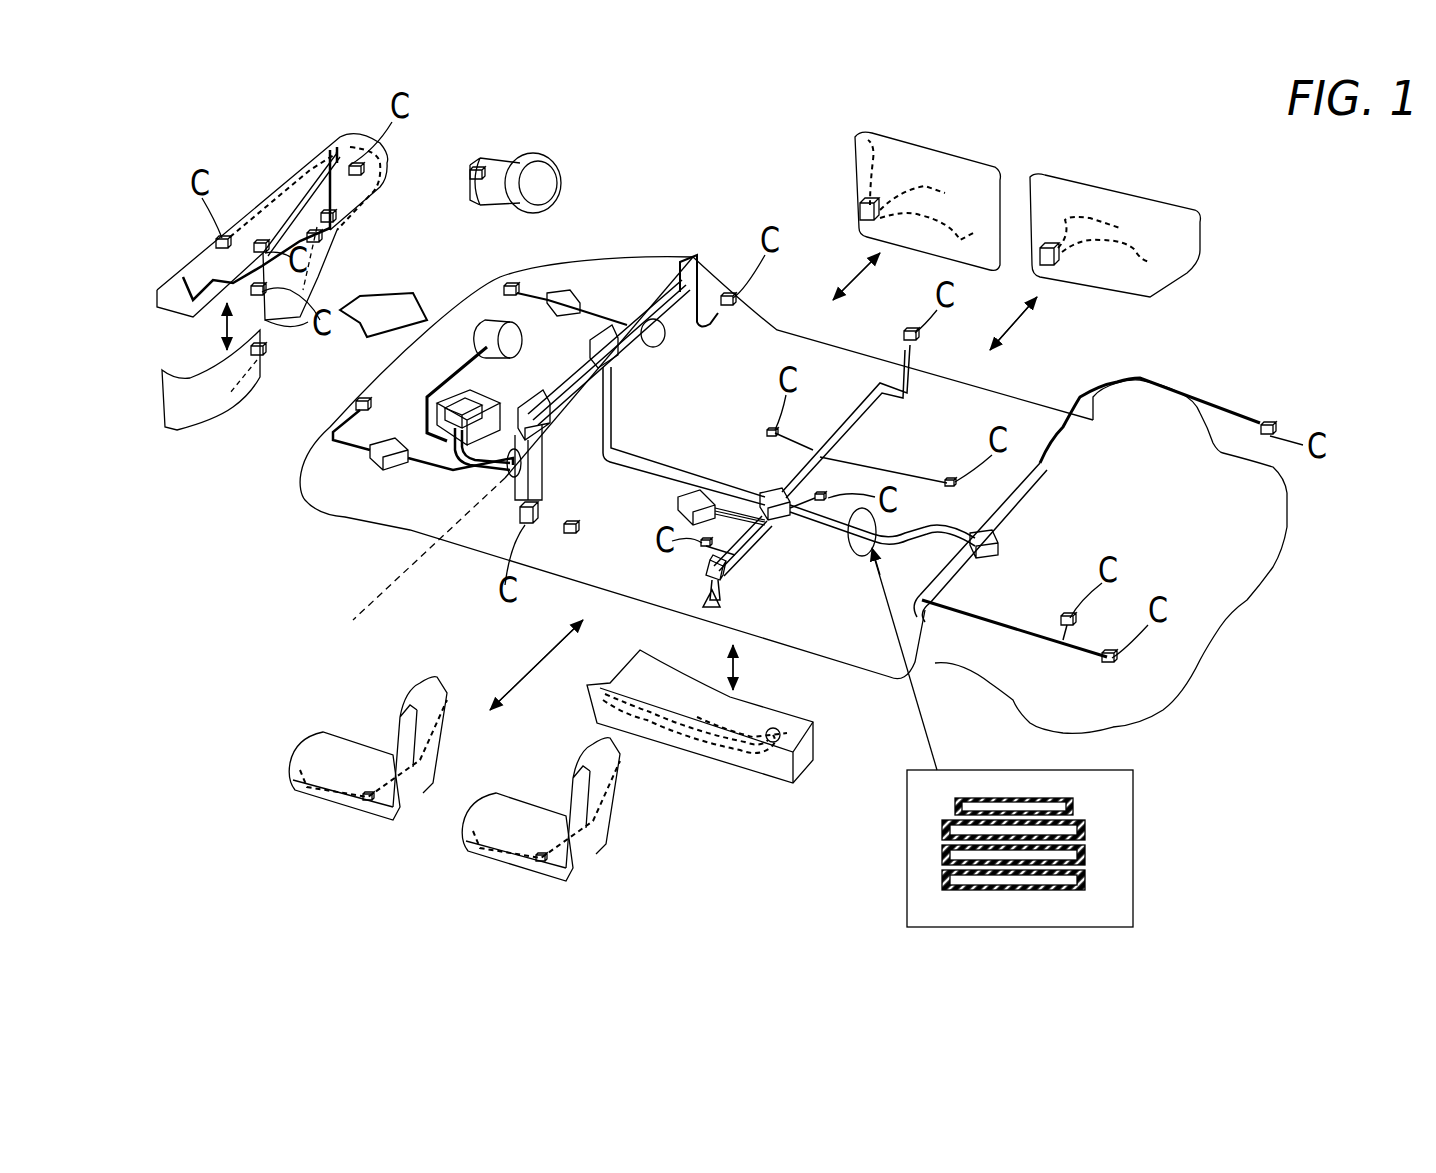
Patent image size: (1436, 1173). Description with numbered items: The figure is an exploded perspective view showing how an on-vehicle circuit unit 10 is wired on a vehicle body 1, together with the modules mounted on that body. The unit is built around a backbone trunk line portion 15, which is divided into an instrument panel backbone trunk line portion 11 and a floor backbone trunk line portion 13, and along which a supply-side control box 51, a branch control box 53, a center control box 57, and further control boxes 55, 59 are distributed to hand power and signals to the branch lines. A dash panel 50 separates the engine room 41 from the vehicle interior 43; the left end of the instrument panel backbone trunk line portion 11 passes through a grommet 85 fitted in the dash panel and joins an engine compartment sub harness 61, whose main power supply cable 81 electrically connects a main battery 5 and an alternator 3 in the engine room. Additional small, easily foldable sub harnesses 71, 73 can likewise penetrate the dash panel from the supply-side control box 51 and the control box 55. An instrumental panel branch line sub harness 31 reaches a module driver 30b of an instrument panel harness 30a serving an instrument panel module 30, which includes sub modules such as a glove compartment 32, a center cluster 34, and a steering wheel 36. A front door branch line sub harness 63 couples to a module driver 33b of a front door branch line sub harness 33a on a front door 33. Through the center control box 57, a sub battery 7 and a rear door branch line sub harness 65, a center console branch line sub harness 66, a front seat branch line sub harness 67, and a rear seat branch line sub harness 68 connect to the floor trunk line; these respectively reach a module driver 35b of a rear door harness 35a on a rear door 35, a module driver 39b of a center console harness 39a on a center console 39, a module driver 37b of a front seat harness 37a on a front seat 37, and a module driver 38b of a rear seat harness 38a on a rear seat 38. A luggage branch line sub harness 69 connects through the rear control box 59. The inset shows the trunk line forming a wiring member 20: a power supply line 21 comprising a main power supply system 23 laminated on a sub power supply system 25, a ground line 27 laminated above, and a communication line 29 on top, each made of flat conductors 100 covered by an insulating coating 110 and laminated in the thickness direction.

The vehicle body 1 is at (1255, 595).
The alternator 3 is at (492, 332).
The main battery 5 is at (480, 400).
The sub battery 7 is at (685, 500).
The on-vehicle circuit unit 10 is at (728, 215).
The instrument panel backbone trunk line portion 11 is at (625, 345).
The floor backbone trunk line portion 13 is at (660, 455).
The backbone trunk line portion 15 is at (720, 385).
The wiring member 20 is at (1000, 895).
The power supply line 21 is at (1159, 839).
The main power supply system 23 is at (1085, 858).
The sub power supply system 25 is at (1085, 878).
The ground line 27 is at (1085, 832).
The communication line 29 is at (1073, 805).
The instrument panel module 30 is at (283, 200).
The instrument panel harness 30a is at (258, 215).
The module driver 30b is at (476, 170).
The instrumental panel branch line sub harness 31 is at (215, 268).
The glove compartment 32 is at (218, 425).
The front door 33 is at (935, 152).
The front door branch line sub harness 33a is at (935, 185).
The module driver 33b is at (860, 212).
The center cluster 34 is at (322, 300).
The rear door 35 is at (1133, 185).
The rear door harness 35a is at (1097, 218).
The module driver 35b is at (1050, 270).
The steering wheel 36 is at (552, 142).
The front seat 37 is at (345, 735).
The front seat harness 37a is at (408, 800).
The module driver 37b is at (366, 803).
The rear seat 38 is at (540, 800).
The rear seat harness 38a is at (583, 860).
The module driver 38b is at (543, 865).
The center console 39 is at (738, 780).
The center console harness 39a is at (695, 760).
The module driver 39b is at (782, 733).
The engine room 41 is at (380, 560).
The vehicle interior 43 is at (467, 587).
The dash panel 50 is at (640, 370).
The supply-side control box 51 is at (548, 425).
The branch control box 53 is at (598, 348).
The control box 55 is at (692, 258).
The center control box 57 is at (770, 492).
The control box 59 is at (1000, 540).
The engine compartment sub harness 61 is at (420, 470).
The front door branch line sub harness 63 is at (725, 305).
The rear door branch line sub harness 65 is at (870, 410).
The center console branch line sub harness 66 is at (858, 538).
The front seat branch line sub harness 67 is at (800, 440).
The rear seat branch line sub harness 68 is at (925, 458).
The luggage branch line sub harness 69 is at (1058, 440).
The sub harness 71 is at (337, 447).
The sub harness 73 is at (600, 315).
The main power supply cable 81 is at (505, 470).
The grommet 85 is at (662, 340).
The flat conductor 100 is at (958, 892).
The insulating coating 110 is at (940, 825).